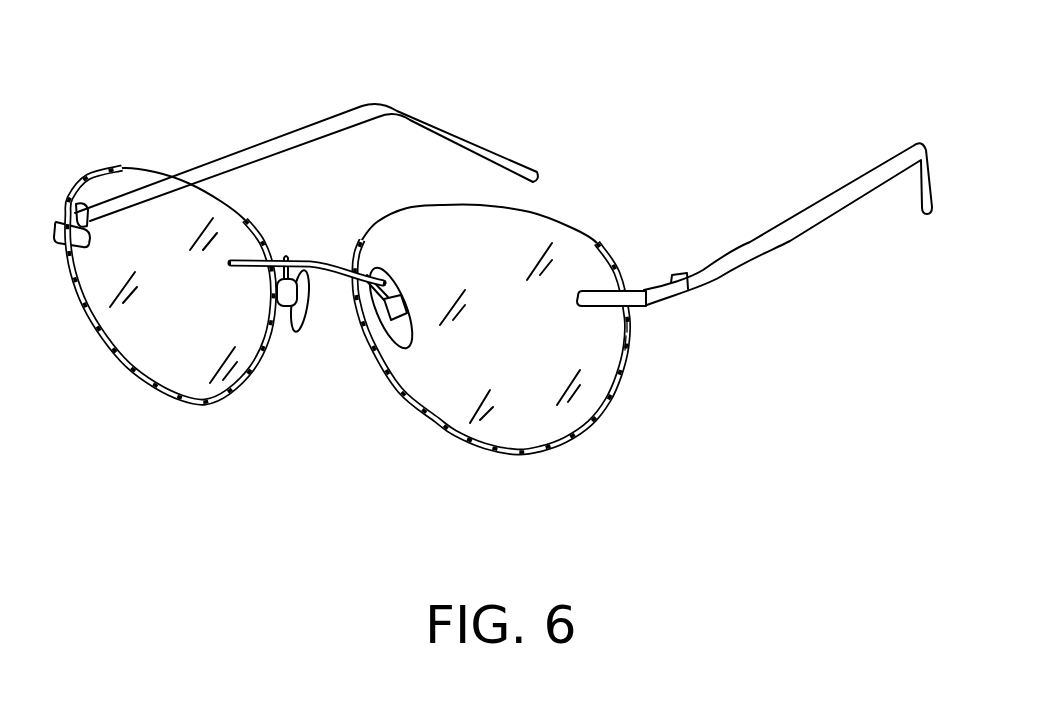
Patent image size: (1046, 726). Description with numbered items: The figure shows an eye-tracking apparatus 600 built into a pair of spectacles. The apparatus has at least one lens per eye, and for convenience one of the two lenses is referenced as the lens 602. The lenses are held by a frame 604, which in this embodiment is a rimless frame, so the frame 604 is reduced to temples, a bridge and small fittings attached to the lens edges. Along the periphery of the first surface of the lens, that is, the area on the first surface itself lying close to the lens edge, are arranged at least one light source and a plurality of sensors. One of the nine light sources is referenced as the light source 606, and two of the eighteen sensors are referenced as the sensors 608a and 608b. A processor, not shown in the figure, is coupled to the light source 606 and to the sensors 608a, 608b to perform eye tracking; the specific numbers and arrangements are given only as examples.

The eye-tracking apparatus 600 is at (682, 114).
The lens 602 is at (432, 360).
The frame 604 is at (743, 255).
The light source 606 is at (632, 333).
The sensor 608a is at (632, 321).
The sensor 608b is at (629, 345).